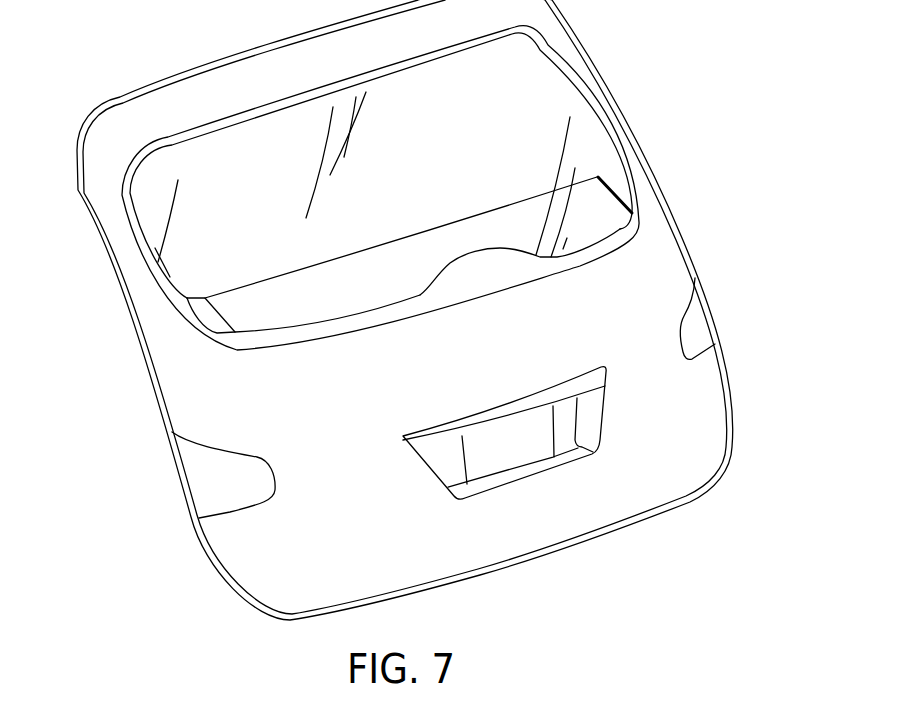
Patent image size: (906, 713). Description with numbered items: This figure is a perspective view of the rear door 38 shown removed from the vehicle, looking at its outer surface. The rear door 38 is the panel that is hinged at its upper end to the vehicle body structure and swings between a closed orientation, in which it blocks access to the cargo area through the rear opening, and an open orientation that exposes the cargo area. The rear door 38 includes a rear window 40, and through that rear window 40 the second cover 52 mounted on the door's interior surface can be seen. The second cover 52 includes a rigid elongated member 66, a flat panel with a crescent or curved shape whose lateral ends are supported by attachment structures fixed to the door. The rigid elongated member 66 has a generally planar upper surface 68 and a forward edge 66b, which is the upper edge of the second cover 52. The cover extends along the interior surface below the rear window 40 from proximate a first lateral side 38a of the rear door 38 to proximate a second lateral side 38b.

The rear door 38 is at (636, 49).
The first lateral side 38a is at (683, 240).
The second lateral side 38b is at (152, 381).
The rear window 40 is at (420, 117).
The second cover 52 is at (262, 276).
The rigid elongated member 66 is at (327, 297).
The forward edge 66b is at (382, 246).
The planar upper surface 68 is at (522, 227).